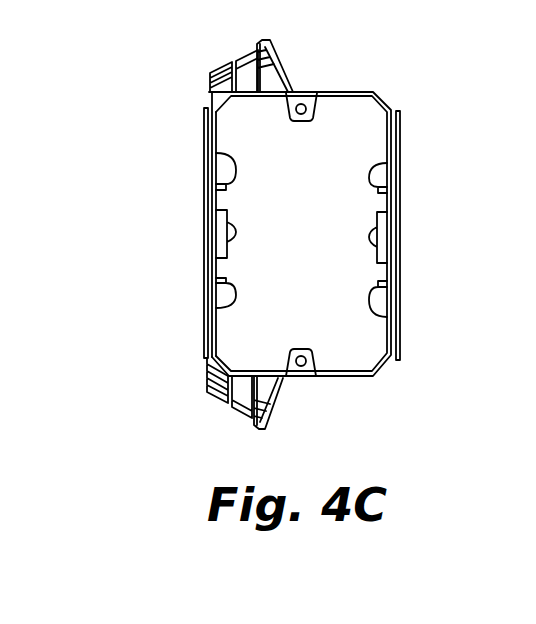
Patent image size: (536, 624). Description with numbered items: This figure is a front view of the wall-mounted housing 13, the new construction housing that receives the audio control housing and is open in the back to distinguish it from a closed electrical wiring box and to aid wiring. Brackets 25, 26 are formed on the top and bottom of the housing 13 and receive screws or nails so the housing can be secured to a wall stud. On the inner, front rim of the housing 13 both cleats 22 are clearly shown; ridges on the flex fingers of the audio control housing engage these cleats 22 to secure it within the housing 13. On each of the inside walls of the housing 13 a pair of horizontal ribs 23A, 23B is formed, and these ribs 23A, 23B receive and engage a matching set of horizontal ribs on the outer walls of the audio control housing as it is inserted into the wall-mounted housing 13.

The housing 13 is at (402, 352).
The cleat 22 is at (233, 230).
The horizontal rib 23A is at (216, 155).
The horizontal rib 23B is at (216, 303).
The bracket 25 is at (272, 48).
The bracket 26 is at (268, 410).